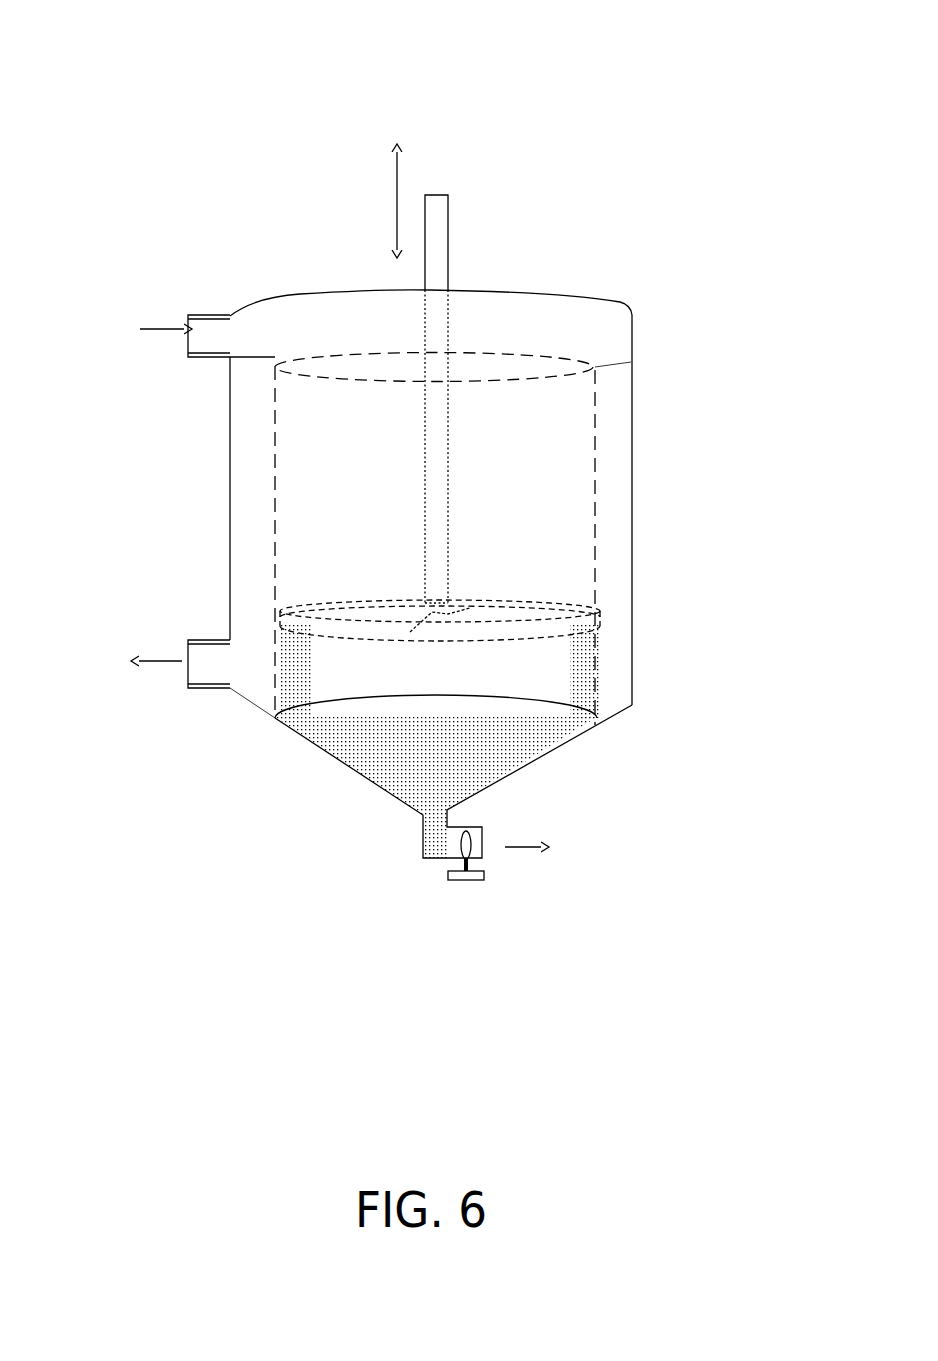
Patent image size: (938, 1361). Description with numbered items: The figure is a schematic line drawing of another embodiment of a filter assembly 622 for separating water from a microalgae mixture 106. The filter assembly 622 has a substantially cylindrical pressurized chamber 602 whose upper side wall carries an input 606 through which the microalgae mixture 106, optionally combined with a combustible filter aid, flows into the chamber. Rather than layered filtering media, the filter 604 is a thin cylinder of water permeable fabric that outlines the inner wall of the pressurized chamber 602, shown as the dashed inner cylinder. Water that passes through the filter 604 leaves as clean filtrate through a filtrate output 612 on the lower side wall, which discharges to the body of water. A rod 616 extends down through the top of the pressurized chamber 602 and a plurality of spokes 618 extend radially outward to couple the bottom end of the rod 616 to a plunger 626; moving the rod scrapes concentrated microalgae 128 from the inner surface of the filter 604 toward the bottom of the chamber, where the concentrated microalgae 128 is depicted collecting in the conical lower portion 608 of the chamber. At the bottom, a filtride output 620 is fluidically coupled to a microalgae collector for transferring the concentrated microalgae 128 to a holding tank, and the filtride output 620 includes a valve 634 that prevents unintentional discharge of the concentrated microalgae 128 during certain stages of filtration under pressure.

The filter assembly 622 is at (82, 67).
The pressurized chamber 602 is at (305, 297).
The filter 604 is at (600, 460).
The microalgae mixture 106 is at (128, 316).
The input 606 is at (213, 343).
The filtrate output 612 is at (215, 673).
The rod 616 is at (438, 247).
The spokes 618 is at (375, 612).
The plunger 626 is at (600, 624).
The concentrated microalgae 128 is at (410, 758).
The conical bottom 608 is at (548, 757).
The filtride output 620 is at (477, 845).
The valve 634 is at (463, 882).